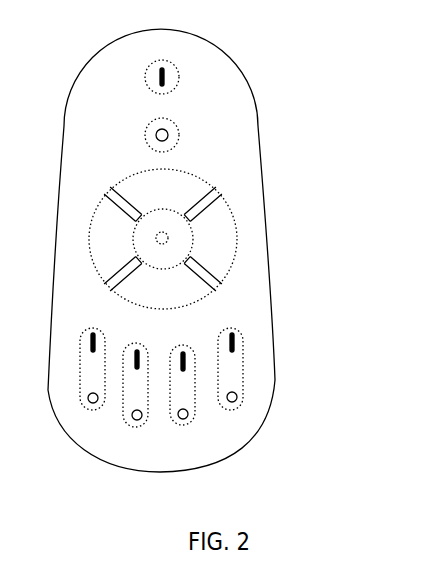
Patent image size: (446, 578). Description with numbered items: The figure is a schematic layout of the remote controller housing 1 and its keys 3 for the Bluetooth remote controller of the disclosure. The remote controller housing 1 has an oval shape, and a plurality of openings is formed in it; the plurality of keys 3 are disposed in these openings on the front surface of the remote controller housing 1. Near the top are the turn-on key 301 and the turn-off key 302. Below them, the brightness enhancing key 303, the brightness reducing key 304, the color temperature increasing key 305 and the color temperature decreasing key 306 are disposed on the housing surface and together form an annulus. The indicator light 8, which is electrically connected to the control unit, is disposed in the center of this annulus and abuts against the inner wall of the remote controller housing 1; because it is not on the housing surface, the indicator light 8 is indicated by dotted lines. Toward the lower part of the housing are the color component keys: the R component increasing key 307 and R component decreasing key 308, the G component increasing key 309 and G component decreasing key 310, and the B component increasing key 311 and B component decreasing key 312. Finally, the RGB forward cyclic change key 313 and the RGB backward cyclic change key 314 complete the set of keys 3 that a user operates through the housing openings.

The remote controller housing 1 is at (90, 86).
The keys 3 is at (223, 279).
The indicator light 8 is at (155, 238).
The turn-on key 301 is at (179, 72).
The turn-off key 302 is at (179, 130).
The brightness enhancing key 303 is at (203, 186).
The brightness reducing key 304 is at (203, 282).
The color temperature increasing key 305 is at (205, 223).
The color temperature decreasing key 306 is at (130, 249).
The R component increasing key 307 is at (95, 332).
The R component decreasing key 308 is at (95, 402).
The G component increasing key 309 is at (138, 351).
The G component decreasing key 310 is at (139, 417).
The B component increasing key 311 is at (186, 364).
The B component decreasing key 312 is at (187, 416).
The RGB forward cyclic change key 313 is at (233, 341).
The RGB backward cyclic change key 314 is at (281, 403).